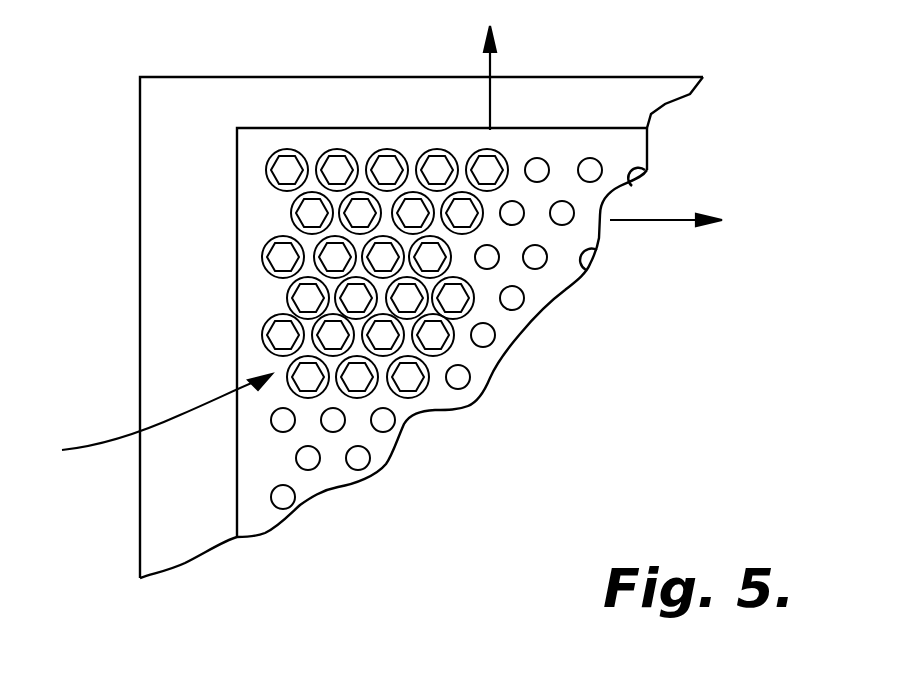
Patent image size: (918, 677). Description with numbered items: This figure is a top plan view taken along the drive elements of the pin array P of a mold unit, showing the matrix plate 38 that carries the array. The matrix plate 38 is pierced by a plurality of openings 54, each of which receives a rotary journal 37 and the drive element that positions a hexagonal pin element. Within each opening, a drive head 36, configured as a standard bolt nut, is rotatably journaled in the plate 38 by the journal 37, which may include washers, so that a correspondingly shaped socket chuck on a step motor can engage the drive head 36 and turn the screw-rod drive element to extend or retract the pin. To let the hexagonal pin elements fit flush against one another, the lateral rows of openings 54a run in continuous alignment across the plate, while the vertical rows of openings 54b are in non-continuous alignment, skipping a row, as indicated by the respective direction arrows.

The drive head 36 is at (335, 168).
The journal 37 is at (285, 165).
The matrix plate 38 is at (590, 283).
The openings 54 is at (462, 384).
The lateral rows of openings 54a is at (660, 220).
The vertical rows of openings 54b is at (493, 98).
The pin array P is at (150, 425).